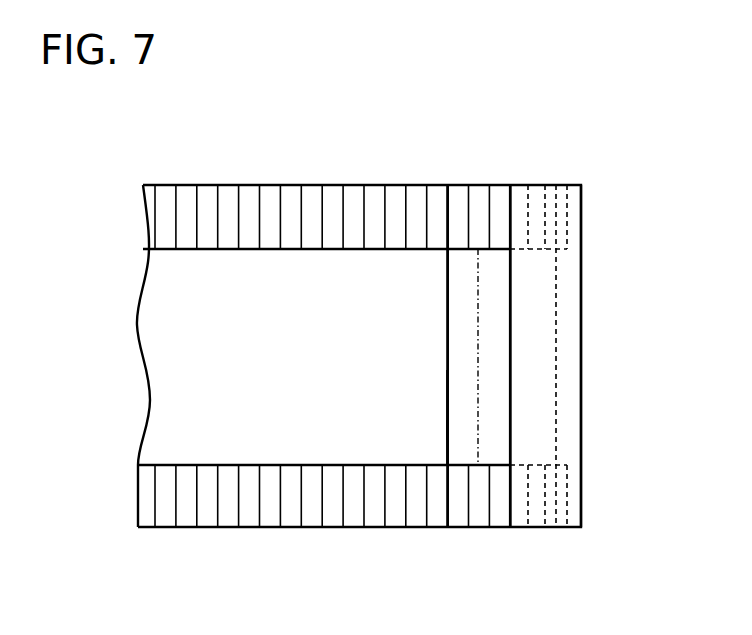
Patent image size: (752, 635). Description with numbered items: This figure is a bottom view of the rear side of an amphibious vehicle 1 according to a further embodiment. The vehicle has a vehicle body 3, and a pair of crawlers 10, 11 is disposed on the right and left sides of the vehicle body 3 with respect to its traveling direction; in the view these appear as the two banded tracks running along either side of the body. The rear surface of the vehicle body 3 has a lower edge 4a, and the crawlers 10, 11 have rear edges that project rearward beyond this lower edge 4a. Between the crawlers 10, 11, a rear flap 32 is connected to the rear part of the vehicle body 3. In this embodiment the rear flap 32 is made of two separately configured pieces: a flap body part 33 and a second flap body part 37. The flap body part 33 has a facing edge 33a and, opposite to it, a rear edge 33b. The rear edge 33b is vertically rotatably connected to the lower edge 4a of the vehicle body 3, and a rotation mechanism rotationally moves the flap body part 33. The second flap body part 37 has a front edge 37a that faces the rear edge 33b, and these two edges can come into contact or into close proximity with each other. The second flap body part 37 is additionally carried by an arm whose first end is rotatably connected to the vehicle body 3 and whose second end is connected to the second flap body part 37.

The amphibious vehicle 1 is at (518, 113).
The vehicle body 3 is at (148, 323).
The crawler 10 is at (313, 512).
The crawler 11 is at (313, 198).
The rear flap 32 is at (597, 263).
The flap body part 33 is at (447, 360).
The facing edge 33a is at (447, 403).
The rear edge 33b is at (510, 445).
The second flap body part 37 is at (582, 320).
The front edge 37a is at (510, 418).
The lower edge 4a is at (447, 435).